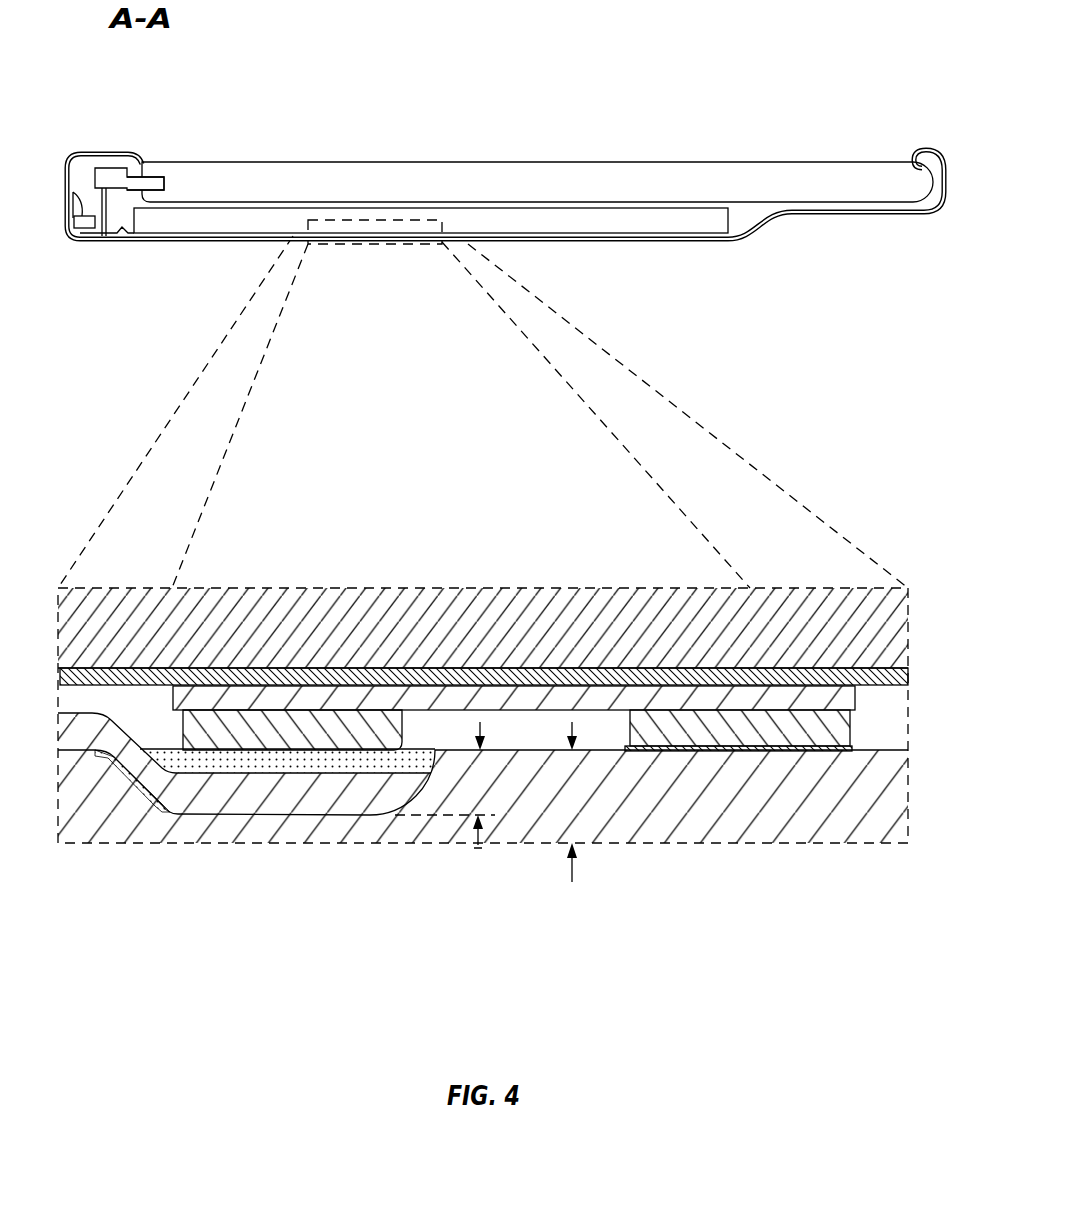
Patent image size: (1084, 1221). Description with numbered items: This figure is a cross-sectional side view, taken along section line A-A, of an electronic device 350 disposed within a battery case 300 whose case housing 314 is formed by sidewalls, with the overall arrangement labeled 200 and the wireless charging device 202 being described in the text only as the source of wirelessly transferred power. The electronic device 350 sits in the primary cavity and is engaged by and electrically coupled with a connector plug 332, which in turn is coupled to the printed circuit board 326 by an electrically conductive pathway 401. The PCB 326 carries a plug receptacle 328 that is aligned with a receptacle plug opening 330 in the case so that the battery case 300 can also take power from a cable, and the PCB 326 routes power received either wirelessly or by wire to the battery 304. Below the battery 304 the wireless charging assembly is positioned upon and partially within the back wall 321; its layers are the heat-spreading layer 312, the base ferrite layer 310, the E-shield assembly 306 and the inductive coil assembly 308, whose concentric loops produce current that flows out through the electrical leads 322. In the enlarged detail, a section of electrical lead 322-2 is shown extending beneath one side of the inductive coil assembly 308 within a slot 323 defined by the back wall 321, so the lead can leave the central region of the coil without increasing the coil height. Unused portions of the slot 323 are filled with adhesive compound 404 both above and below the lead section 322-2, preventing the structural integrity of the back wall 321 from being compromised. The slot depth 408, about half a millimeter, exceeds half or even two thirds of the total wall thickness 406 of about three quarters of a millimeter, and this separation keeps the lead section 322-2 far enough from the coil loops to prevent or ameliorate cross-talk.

The electronic device housing 200 is at (780, 132).
The wireless charging device 202 is at (603, 160).
The battery case 300 is at (70, 124).
The battery 304 is at (534, 232).
The E-shield assembly 306 is at (852, 749).
The inductive coil assembly 308 is at (270, 740).
The base ferrite layer 310 is at (855, 705).
The heat-spreading layer 312 is at (915, 670).
The case housing 314 is at (876, 514).
The back wall 321 is at (608, 240).
The electrical leads 322 is at (128, 236).
The section of electrical lead 322-2 is at (238, 802).
The slot 323 is at (157, 826).
The printed circuit board 326 is at (106, 234).
The plug receptacle 328 is at (80, 202).
The receptacle plug opening 330 is at (69, 238).
The connector plug 332 is at (160, 176).
The electronic device 350 is at (582, 193).
The electrically conductive pathway 401 is at (110, 190).
The adhesive compound 404 is at (176, 748).
The total wall thickness 406 is at (551, 802).
The depth 408 is at (445, 785).